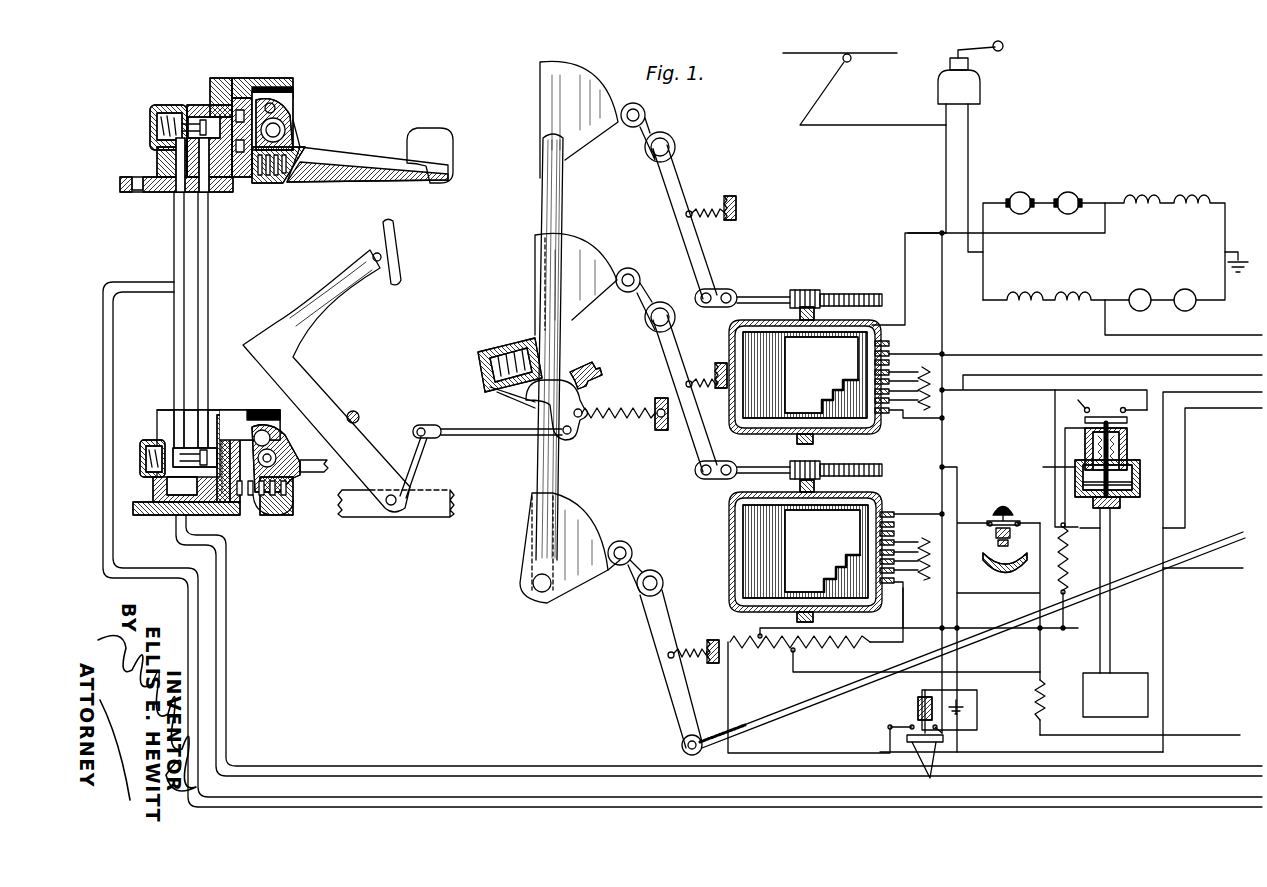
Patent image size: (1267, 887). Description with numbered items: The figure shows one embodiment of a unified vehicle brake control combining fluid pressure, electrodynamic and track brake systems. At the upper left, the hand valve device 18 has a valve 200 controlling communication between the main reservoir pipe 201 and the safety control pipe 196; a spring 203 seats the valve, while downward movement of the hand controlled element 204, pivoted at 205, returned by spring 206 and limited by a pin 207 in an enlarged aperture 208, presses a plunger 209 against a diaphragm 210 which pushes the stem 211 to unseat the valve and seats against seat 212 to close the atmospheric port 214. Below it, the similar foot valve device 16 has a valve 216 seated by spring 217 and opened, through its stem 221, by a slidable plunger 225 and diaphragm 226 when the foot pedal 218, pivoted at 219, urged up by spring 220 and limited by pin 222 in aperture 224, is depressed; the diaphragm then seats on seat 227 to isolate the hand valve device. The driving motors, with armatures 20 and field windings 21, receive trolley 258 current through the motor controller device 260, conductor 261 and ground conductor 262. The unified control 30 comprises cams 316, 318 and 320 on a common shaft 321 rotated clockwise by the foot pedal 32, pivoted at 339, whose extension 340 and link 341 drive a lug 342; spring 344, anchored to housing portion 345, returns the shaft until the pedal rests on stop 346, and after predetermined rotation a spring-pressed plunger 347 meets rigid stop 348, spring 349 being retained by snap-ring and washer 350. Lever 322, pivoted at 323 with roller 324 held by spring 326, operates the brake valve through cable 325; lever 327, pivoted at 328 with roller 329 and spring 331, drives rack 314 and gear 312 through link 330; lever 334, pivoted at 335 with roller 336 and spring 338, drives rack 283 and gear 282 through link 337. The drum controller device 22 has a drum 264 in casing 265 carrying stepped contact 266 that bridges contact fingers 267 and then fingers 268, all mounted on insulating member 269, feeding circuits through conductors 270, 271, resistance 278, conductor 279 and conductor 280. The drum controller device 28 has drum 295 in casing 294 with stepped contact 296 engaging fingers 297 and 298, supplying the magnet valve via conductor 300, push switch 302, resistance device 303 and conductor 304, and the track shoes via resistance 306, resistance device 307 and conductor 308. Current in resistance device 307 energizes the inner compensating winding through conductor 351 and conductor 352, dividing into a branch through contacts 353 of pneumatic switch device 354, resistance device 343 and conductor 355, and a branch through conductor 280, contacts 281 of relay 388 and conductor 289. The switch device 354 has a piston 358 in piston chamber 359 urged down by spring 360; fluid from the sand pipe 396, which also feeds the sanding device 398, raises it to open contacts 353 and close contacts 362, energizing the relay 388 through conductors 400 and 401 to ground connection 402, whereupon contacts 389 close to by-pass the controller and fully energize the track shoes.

The foot valve device 16 is at (272, 410).
The hand valve device 18 is at (298, 78).
The armatures 20 is at (1020, 192).
The field windings 21 is at (1150, 195).
The drum controller device 22 is at (868, 347).
The drum controller device 28 is at (818, 544).
The unified control 30 is at (510, 495).
The foot pedal 32 is at (385, 222).
The safety control pipe 196 is at (207, 283).
The valve 200 is at (188, 120).
The main reservoir pipe 201 is at (303, 797).
The spring 203 is at (152, 118).
The hand controlled element 204 is at (372, 158).
The pivot 205 is at (283, 98).
The spring 206 is at (272, 184).
The pin 207 is at (290, 118).
The enlarged aperture 208 is at (298, 138).
The plunger 209 is at (262, 80).
The diaphragm 210 is at (238, 180).
The stem 211 is at (160, 155).
The seat 212 is at (212, 107).
The port 214 is at (222, 78).
The valve 216 is at (176, 446).
The spring 217 is at (146, 442).
The foot pedal 218 is at (300, 473).
The pivot 219 is at (270, 436).
The spring 220 is at (265, 520).
The stem 221 is at (212, 515).
The pin 222 is at (276, 458).
The enlarged aperture 224 is at (290, 505).
The slidable plunger 225 is at (226, 412).
The diaphragm 226 is at (238, 402).
The seat 227 is at (180, 430).
The trolley 258 is at (830, 90).
The motor controller device 260 is at (965, 92).
The conductor 261 is at (970, 135).
The conductor 262 is at (1235, 256).
The rotatable drum 264 is at (775, 326).
The casing 265 is at (882, 325).
The stepped contact 266 is at (787, 365).
The stationary contact fingers 267 is at (890, 343).
The contact fingers 268 is at (850, 377).
The insulating member 269 is at (888, 413).
The conductor 270 is at (912, 232).
The conductor 271 is at (1022, 355).
The resistance 278 is at (924, 372).
The conductor 279 is at (985, 385).
The conductor 280 is at (1180, 336).
The contacts 281 is at (926, 778).
The gear 282 is at (805, 288).
The rack 283 is at (840, 292).
The conductor 289 is at (798, 735).
The casing 294 is at (880, 494).
The drum 295 is at (730, 500).
The stepped contact 296 is at (790, 552).
The stationary contact fingers 297 is at (890, 517).
The stationary contact fingers 298 is at (850, 552).
The conductor 300 is at (944, 168).
The push switch 302 is at (1003, 503).
The resistance device 303 is at (1044, 700).
The conductor 304 is at (1172, 735).
The resistance 306 is at (929, 583).
The resistance device 307 is at (800, 652).
The conductor 308 is at (965, 752).
The gear 312 is at (798, 462).
The rack 314 is at (863, 457).
The cam 316 is at (520, 558).
The cam 318 is at (532, 266).
The cam 320 is at (540, 110).
The shaft 321 is at (573, 207).
The lever 322 is at (648, 642).
The pivot 323 is at (645, 595).
The roller 324 is at (620, 540).
The cable 325 is at (734, 742).
The spring 326 is at (715, 660).
The lever 327 is at (668, 358).
The pivot 328 is at (658, 326).
The roller 329 is at (628, 268).
The link 330 is at (747, 445).
The spring 331 is at (718, 390).
The lever 334 is at (670, 200).
The pivot 335 is at (660, 156).
The roller 336 is at (636, 102).
The link 337 is at (722, 288).
The spring 338 is at (738, 220).
The pivot 339 is at (389, 507).
The extension 340 is at (412, 452).
The link 341 is at (458, 424).
The lug 342 is at (574, 440).
The resistance device 343 is at (1068, 537).
The spring 344 is at (625, 422).
The housing portion 345 is at (658, 402).
The stop 346 is at (352, 410).
The spring-pressed plunger 347 is at (486, 351).
The rigid stop 348 is at (583, 362).
The spring 349 is at (490, 362).
The snap-ring and washer 350 is at (492, 378).
The conductor 351 is at (958, 628).
The conductor 352 is at (1212, 565).
The contacts 353 is at (1125, 440).
The pneumatic switch device 354 is at (1150, 473).
The conductor 355 is at (960, 680).
The piston 358 is at (1135, 487).
The piston chamber 359 is at (1128, 502).
The spring 360 is at (1033, 463).
The contacts 362 is at (1112, 398).
The relay 388 is at (918, 708).
The contacts 389 is at (906, 737).
The sand pipe 396 is at (1192, 578).
The sanding device 398 is at (1120, 682).
The conductor 400 is at (1053, 400).
The conductor 401 is at (983, 593).
The ground connection 402 is at (969, 710).